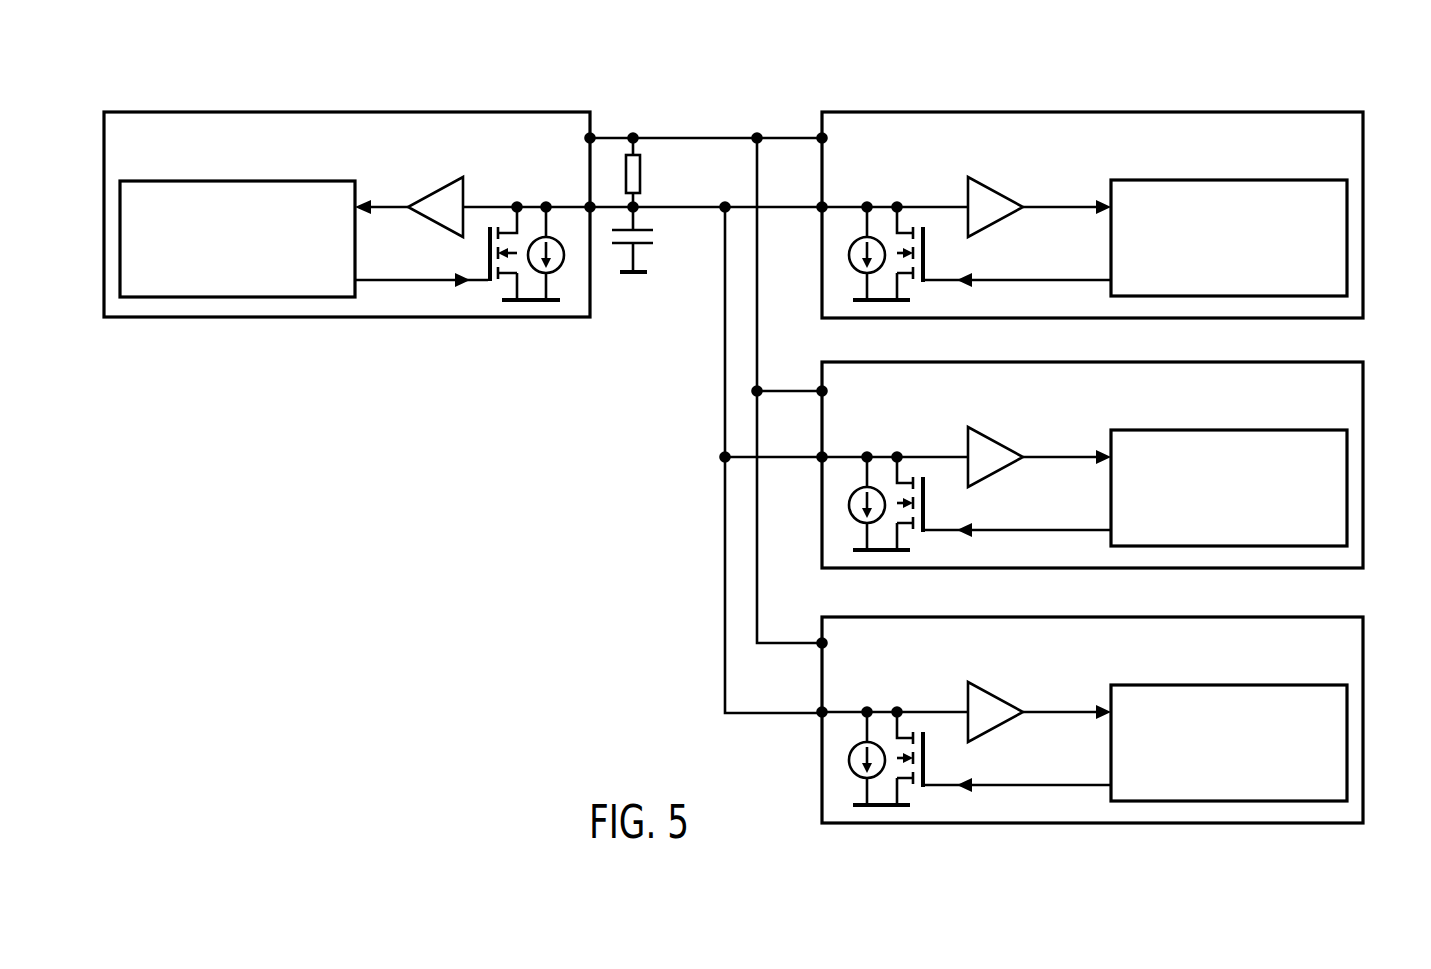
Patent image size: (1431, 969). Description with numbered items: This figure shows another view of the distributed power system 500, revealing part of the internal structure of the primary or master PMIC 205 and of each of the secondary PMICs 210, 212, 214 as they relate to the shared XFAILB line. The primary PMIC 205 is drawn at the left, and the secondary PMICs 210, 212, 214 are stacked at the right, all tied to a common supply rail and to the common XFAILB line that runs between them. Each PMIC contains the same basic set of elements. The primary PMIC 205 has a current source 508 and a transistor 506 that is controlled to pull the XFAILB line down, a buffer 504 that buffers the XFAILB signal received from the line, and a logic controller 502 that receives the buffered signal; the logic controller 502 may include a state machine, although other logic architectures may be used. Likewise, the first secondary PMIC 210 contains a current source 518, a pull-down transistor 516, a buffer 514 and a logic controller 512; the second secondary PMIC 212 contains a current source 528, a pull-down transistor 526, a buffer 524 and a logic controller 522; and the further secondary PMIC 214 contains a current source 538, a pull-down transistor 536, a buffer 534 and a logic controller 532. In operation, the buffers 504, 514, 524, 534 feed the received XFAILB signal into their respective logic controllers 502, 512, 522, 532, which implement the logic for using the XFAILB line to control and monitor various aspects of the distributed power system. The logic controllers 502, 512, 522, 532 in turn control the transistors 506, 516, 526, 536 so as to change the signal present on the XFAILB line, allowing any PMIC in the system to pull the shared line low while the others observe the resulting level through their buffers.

The multi-PMIC system 500 is at (176, 74).
The primary PMIC 205 is at (495, 112).
The secondary PMIC 210 is at (1165, 112).
The secondary PMIC 212 is at (1160, 363).
The secondary PMIC 214 is at (1190, 617).
The logic controller 502 is at (150, 297).
The buffer 504 is at (437, 190).
The transistor 506 is at (488, 254).
The current source 508 is at (558, 268).
The logic controller 512 is at (1330, 180).
The buffer 514 is at (995, 186).
The transistor 516 is at (851, 252).
The current source 518 is at (907, 277).
The logic controller 522 is at (1292, 430).
The buffer 524 is at (995, 436).
The transistor 526 is at (851, 502).
The current source 528 is at (907, 527).
The logic controller 532 is at (1340, 685).
The buffer 534 is at (995, 691).
The transistor 536 is at (851, 757).
The current source 538 is at (907, 782).